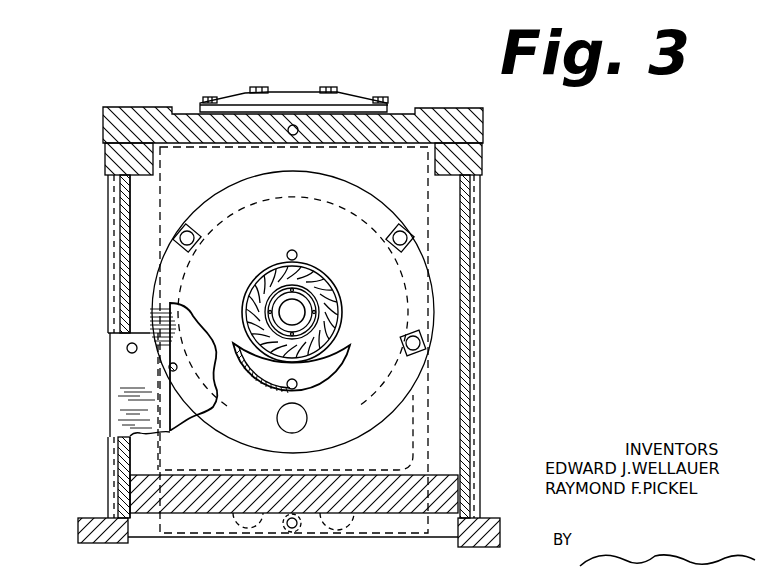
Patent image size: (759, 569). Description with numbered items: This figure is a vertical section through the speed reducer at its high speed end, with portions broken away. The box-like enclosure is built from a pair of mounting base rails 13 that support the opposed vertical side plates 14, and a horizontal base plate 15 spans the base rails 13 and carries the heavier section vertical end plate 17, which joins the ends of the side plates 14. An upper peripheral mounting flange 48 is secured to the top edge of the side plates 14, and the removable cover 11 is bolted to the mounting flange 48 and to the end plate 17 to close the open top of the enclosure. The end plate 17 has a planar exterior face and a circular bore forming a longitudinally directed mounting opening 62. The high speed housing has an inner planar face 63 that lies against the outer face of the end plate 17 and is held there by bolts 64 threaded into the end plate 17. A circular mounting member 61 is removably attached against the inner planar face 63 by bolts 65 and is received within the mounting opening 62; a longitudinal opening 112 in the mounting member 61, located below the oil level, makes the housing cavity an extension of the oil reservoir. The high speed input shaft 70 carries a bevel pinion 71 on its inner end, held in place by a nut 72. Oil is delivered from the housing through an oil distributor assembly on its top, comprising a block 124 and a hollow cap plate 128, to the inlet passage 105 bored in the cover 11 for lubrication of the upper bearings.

The removable cover 11 is at (469, 104).
The mounting base rails 13 is at (80, 530).
The vertical side plates 14 is at (121, 228).
The horizontal base plate 15 is at (400, 505).
The heavier section vertical end plate 17 is at (218, 466).
The upper peripheral mounting flange 48 is at (105, 164).
The mounting member 61 is at (213, 318).
The mounting opening 62 is at (247, 442).
The inner planar face 63 is at (125, 410).
The bolts 64 is at (127, 348).
The bolts 65 is at (188, 230).
The high speed input shaft 70 is at (294, 310).
The bevel pinion 71 is at (338, 315).
The nut 72 is at (318, 300).
The inlet passage 105 is at (293, 125).
The longitudinal opening 112 is at (307, 418).
The block 124 is at (250, 108).
The hollow cap plate 128 is at (353, 100).